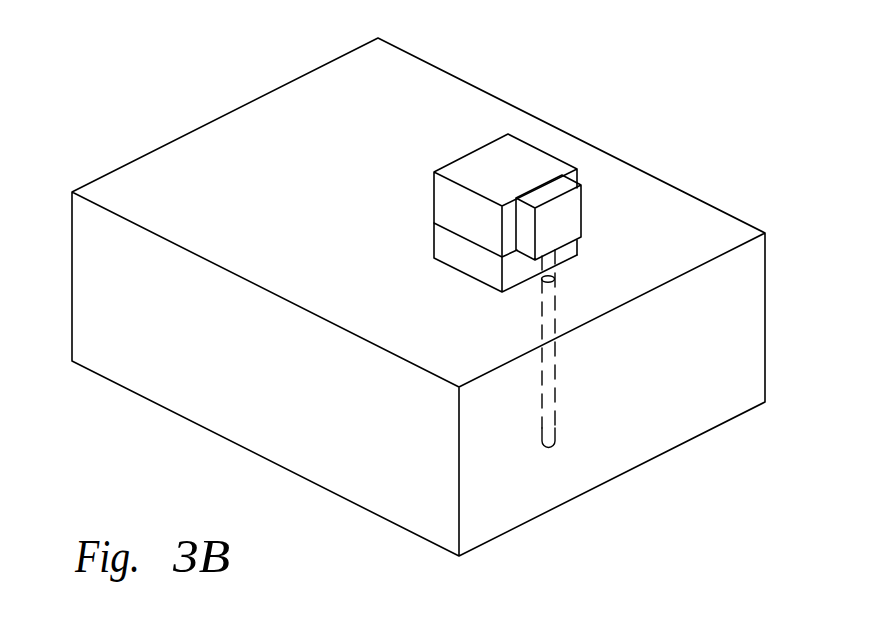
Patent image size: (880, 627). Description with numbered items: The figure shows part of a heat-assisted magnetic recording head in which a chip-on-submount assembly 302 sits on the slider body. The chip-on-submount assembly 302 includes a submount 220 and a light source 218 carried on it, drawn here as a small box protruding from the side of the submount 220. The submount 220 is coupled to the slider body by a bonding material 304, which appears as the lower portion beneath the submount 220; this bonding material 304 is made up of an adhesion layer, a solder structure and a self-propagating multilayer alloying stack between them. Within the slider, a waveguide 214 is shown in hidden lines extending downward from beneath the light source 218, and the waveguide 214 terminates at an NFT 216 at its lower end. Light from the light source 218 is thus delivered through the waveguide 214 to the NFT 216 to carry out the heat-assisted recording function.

The chip-on-submount assembly 302 is at (592, 114).
The submount 220 is at (440, 192).
The bonding material 304 is at (440, 239).
The light source 218 is at (573, 214).
The waveguide 214 is at (549, 400).
The NFT 216 is at (553, 443).